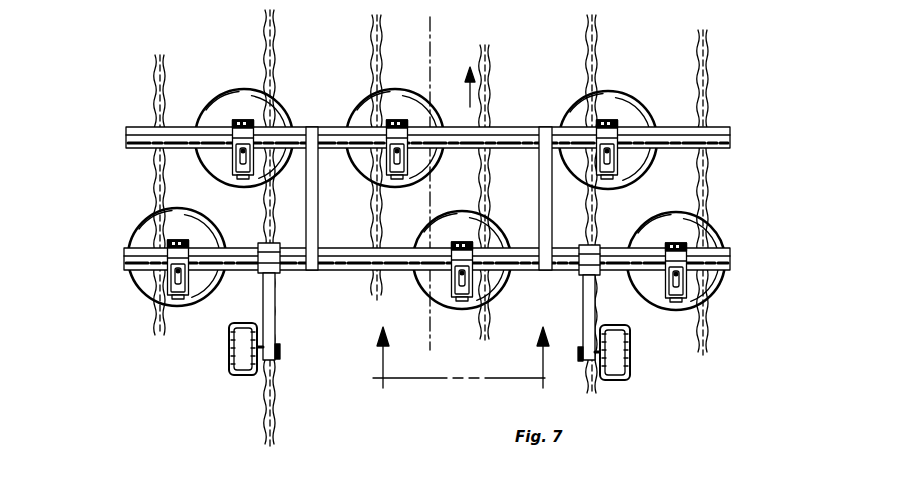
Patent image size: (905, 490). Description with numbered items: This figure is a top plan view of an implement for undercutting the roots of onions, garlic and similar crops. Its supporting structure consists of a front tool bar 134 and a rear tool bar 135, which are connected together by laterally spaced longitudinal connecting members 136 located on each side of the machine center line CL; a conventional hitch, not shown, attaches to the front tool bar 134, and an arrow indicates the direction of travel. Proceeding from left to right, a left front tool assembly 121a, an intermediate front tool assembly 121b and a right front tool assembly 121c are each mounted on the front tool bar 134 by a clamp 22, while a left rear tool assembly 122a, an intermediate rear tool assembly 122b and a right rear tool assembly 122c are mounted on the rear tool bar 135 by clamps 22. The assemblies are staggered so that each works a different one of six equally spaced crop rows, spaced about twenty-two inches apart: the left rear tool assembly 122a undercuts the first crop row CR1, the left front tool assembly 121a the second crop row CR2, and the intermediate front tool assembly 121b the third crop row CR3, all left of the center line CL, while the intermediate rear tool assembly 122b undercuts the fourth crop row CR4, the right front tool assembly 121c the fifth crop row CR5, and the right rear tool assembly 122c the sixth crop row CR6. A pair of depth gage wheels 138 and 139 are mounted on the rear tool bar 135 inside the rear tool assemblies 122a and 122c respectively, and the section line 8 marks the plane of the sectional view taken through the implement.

The left front tool assembly 121a is at (238, 98).
The intermediate front tool assembly 121b is at (412, 70).
The right front tool assembly 121c is at (598, 95).
The left rear tool assembly 122a is at (155, 302).
The intermediate rear tool assembly 122b is at (460, 305).
The right rear tool assembly 122c is at (692, 233).
The clamp 22 is at (246, 122).
The first crop row CR1 is at (157, 97).
The second crop row CR2 is at (275, 73).
The third crop row CR3 is at (372, 89).
The fourth crop row CR4 is at (489, 77).
The fifth crop row CR5 is at (588, 50).
The sixth crop row CR6 is at (706, 78).
The machine center line CL is at (431, 52).
The front tool bar 134 is at (725, 130).
The rear tool bar 135 is at (722, 260).
The longitudinal connecting member 136 is at (552, 203).
The depth gage wheel 138 is at (229, 352).
The depth gage wheel 139 is at (620, 363).
The section line 8- 8 is at (461, 348).